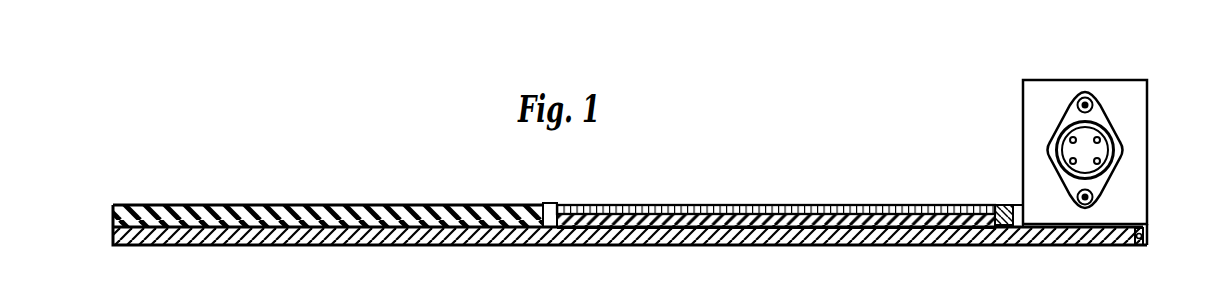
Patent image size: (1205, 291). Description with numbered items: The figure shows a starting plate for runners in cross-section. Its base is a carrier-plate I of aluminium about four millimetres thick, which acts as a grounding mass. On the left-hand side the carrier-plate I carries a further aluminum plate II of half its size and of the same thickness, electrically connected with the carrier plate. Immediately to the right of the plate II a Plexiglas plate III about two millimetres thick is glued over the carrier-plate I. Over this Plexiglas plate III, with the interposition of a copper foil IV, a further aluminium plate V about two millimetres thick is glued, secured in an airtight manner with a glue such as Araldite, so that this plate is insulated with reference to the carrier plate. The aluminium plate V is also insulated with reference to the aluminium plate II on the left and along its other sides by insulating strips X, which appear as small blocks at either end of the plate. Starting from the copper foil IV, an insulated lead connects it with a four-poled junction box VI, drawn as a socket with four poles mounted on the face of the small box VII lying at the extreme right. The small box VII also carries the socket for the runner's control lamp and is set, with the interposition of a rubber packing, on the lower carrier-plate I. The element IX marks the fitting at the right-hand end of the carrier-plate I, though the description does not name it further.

The carrier-plate I is at (144, 239).
The aluminum plate II is at (133, 215).
The Plexiglas plate III is at (727, 222).
The copper foil IV is at (913, 228).
The aluminium plate V is at (748, 210).
The four-poled junction box VI is at (1103, 178).
The small box VII is at (1037, 92).
The end fitting IX is at (1140, 238).
The insulating strips X is at (550, 217).